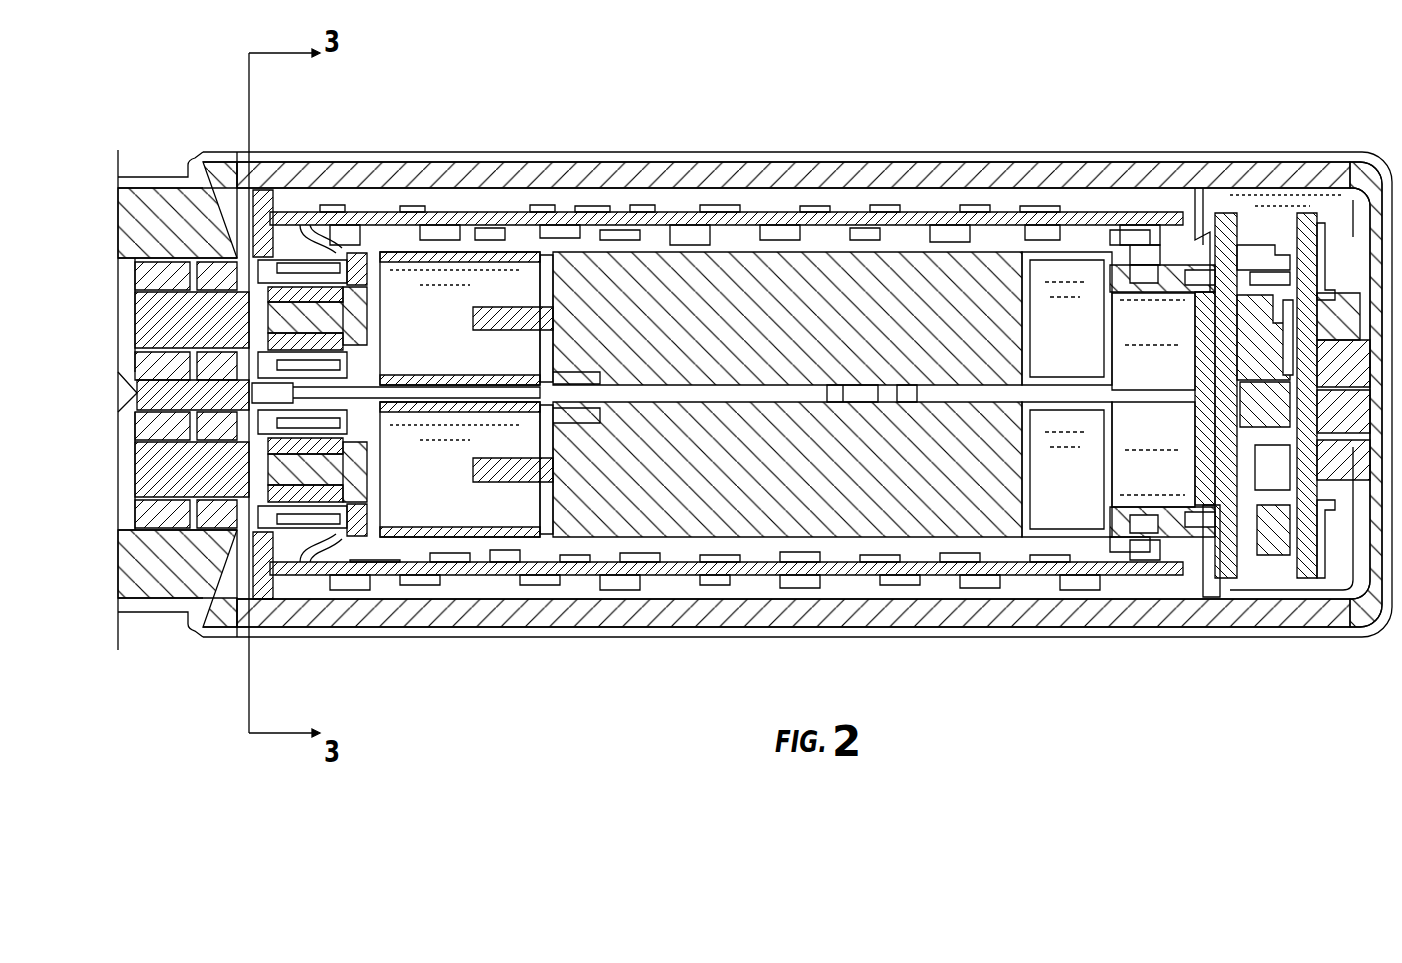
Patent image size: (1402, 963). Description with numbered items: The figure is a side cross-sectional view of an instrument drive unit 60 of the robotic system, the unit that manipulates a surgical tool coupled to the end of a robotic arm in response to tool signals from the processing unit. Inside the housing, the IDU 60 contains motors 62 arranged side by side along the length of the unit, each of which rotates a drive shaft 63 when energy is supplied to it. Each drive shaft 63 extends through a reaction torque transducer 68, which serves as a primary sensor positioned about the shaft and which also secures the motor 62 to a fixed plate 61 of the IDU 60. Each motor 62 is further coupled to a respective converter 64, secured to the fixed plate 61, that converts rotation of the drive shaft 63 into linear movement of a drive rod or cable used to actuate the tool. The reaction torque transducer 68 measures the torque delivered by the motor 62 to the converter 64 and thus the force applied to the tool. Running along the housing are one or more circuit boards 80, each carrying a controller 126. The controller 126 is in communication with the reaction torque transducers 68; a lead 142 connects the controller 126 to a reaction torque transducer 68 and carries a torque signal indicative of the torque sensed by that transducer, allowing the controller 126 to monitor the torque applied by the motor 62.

The instrument drive unit 60 is at (1076, 128).
The fixed plate 61 is at (216, 190).
The motor 62 is at (895, 338).
The drive shaft 63 is at (170, 310).
The converter 64 is at (128, 437).
The reaction torque transducer 68 is at (383, 296).
The circuit board 80 is at (684, 212).
The controller 126 is at (406, 232).
The lead 142 is at (305, 238).